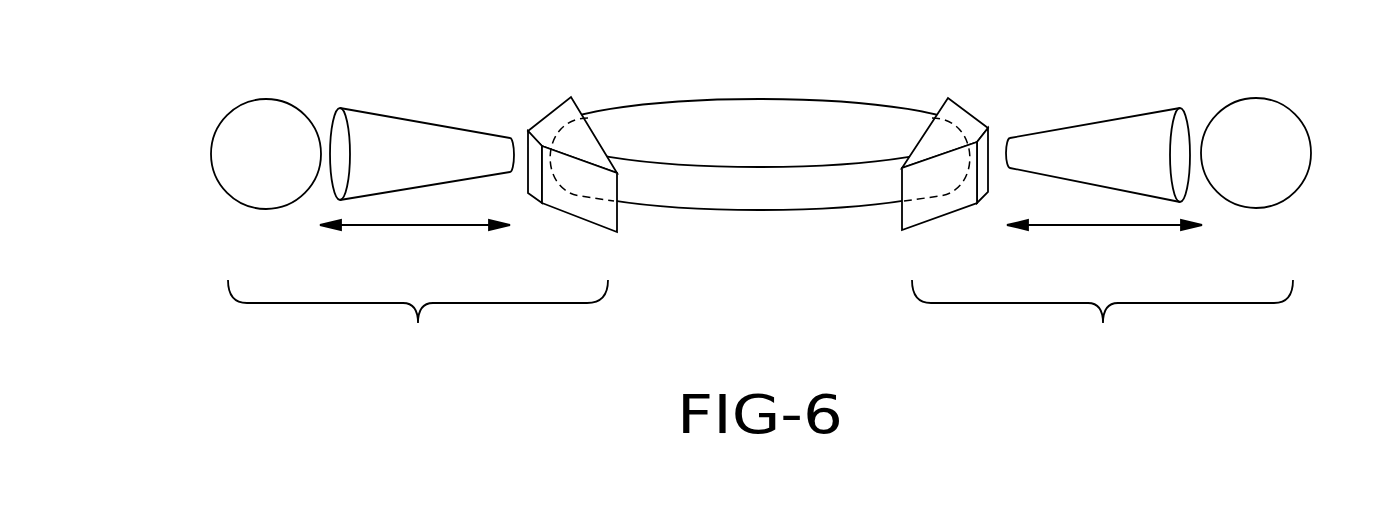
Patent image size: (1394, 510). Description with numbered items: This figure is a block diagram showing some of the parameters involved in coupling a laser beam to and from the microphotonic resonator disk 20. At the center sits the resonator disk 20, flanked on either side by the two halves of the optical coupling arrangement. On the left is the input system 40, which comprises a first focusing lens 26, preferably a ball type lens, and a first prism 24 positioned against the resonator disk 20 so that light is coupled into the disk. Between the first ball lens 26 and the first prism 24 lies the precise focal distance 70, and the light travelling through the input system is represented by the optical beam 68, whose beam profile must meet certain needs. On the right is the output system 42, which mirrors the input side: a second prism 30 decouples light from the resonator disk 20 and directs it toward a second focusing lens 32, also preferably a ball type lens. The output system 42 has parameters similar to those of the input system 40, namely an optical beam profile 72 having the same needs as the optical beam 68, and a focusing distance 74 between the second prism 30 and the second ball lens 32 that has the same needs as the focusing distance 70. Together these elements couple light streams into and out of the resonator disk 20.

The resonator disk 20 is at (680, 117).
The first prism 24 is at (548, 123).
The first focusing lens 26 is at (252, 113).
The optical beam 68 is at (392, 138).
The focal distance 70 is at (373, 227).
The second prism 30 is at (972, 122).
The optical beam profile 72 is at (1128, 138).
The second focusing lens 32 is at (1268, 113).
The focusing distance 74 is at (1143, 227).
The input system 40 is at (402, 387).
The output system 42 is at (1088, 387).